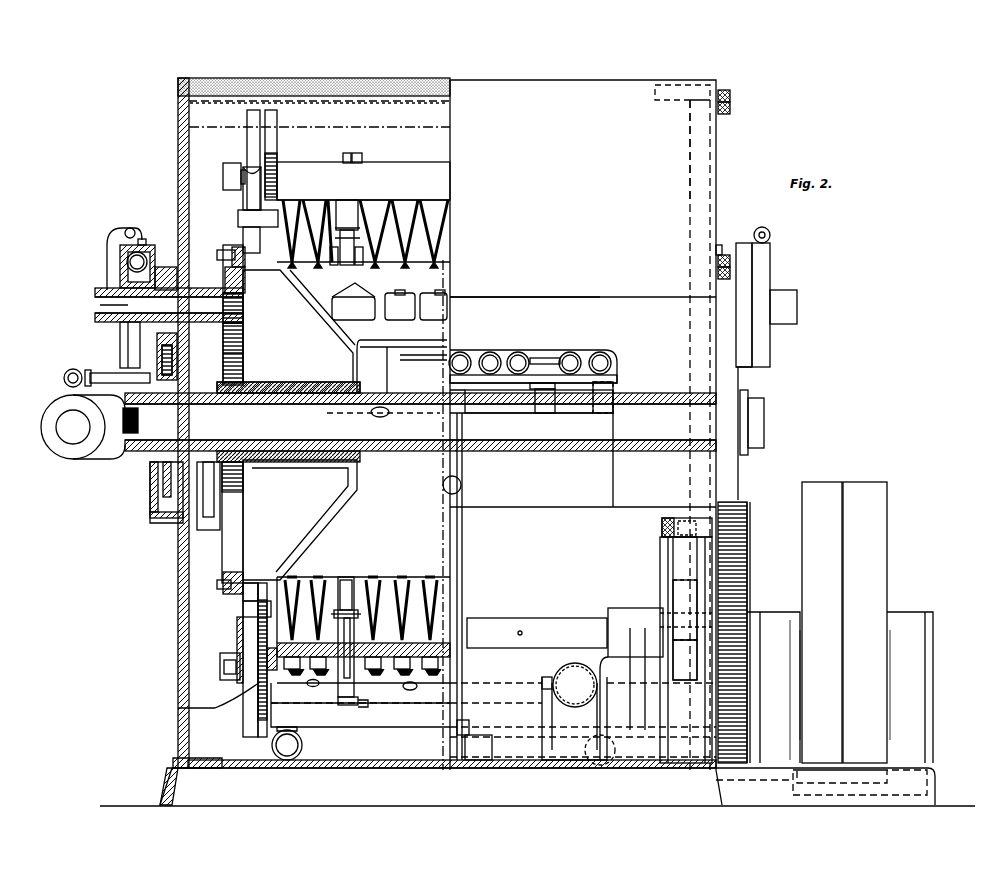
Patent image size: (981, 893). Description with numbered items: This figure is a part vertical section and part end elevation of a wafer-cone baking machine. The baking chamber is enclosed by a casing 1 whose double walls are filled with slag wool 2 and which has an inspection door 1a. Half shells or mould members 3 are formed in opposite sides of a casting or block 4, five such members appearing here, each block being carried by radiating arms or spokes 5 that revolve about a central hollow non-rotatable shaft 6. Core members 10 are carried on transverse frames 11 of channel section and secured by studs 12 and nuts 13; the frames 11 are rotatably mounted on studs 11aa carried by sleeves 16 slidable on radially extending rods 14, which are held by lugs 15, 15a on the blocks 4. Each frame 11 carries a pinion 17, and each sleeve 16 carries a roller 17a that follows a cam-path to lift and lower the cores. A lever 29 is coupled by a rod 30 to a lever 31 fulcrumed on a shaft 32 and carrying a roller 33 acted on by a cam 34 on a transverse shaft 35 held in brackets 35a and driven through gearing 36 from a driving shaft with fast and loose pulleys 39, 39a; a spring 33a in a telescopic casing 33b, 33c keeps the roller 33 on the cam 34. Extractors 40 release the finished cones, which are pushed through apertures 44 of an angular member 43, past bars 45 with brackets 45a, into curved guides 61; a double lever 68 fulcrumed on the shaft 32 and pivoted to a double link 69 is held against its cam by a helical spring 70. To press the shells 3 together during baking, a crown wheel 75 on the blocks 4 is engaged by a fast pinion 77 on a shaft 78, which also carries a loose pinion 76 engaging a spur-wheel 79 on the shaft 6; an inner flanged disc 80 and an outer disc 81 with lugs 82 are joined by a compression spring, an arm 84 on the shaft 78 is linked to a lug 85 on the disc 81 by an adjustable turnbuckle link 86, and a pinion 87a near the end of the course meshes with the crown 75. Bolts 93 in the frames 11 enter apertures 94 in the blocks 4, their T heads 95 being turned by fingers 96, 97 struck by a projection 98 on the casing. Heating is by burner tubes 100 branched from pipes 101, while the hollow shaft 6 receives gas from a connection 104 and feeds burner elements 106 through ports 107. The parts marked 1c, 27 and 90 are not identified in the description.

The casing 1 is at (383, 85).
The door 1a is at (670, 178).
The frame chamber 1c is at (582, 300).
The slag wool 2 is at (272, 88).
The half shells 3 is at (446, 247).
The casting or block 4 is at (395, 295).
The radiating arms or spokes 5 is at (295, 296).
The central hollow non-rotatable shaft 6 is at (378, 422).
The core members 10 is at (440, 218).
The transverse frames 11 is at (410, 172).
The studs 11aa is at (178, 708).
The studs 12 is at (405, 657).
The nuts 13 is at (310, 670).
The radially extending rods 14 is at (262, 142).
The lug 15 is at (250, 250).
The lug 15a is at (248, 215).
The sleeves 16 is at (252, 170).
The pinion 17 is at (278, 170).
The roller 17a is at (232, 165).
The pin 27 is at (218, 255).
The lever 29 is at (183, 520).
The rod 30 is at (215, 524).
The lever 31 is at (676, 557).
The shaft 32 is at (510, 762).
The roller 33 is at (680, 607).
The spring 33a is at (545, 687).
The telescopic casing 33b is at (582, 678).
The sleeve 33c is at (560, 676).
The cam 34 is at (680, 575).
The transverse shaft 35 is at (532, 622).
The brackets 35a is at (623, 612).
The gearing 36 is at (742, 570).
The fast pulley 39 is at (818, 484).
The loose pulley 39a is at (866, 484).
The extractors 40 is at (326, 203).
The angular member 43 is at (538, 356).
The apertures 44 is at (505, 354).
The bars or plates 45 is at (555, 386).
The brackets 45a is at (555, 400).
The curved troughs or guides 61 is at (470, 356).
The double lever 68 is at (465, 560).
The double link 69 is at (505, 420).
The helical spring 70 is at (462, 485).
The internal toothed crown wheel 75 is at (246, 355).
The loose pinion 76 is at (178, 285).
The fast pinion 77 is at (244, 295).
The shaft 78 is at (112, 300).
The spur-wheel 79 is at (178, 362).
The inner circular flanged disc 80 is at (145, 253).
The outer disc 81 is at (128, 334).
The spaced lugs 82 is at (122, 262).
The upwardly extending arm 84 is at (110, 247).
The lug 85 is at (130, 228).
The adjustable turnbuckle link 86 is at (143, 240).
The pinion 87a is at (243, 537).
The rod 90 is at (735, 482).
The bolt 93 is at (350, 270).
The socket or aperture 94 is at (335, 268).
The T head 95 is at (359, 256).
The finger 96 is at (343, 158).
The finger 97 is at (360, 158).
The projection 98 is at (349, 204).
The burner tubes 100 is at (412, 695).
The pipes 101 is at (302, 746).
The connection 104 is at (75, 370).
The burner elements 106 is at (410, 305).
The ports 107 is at (380, 417).